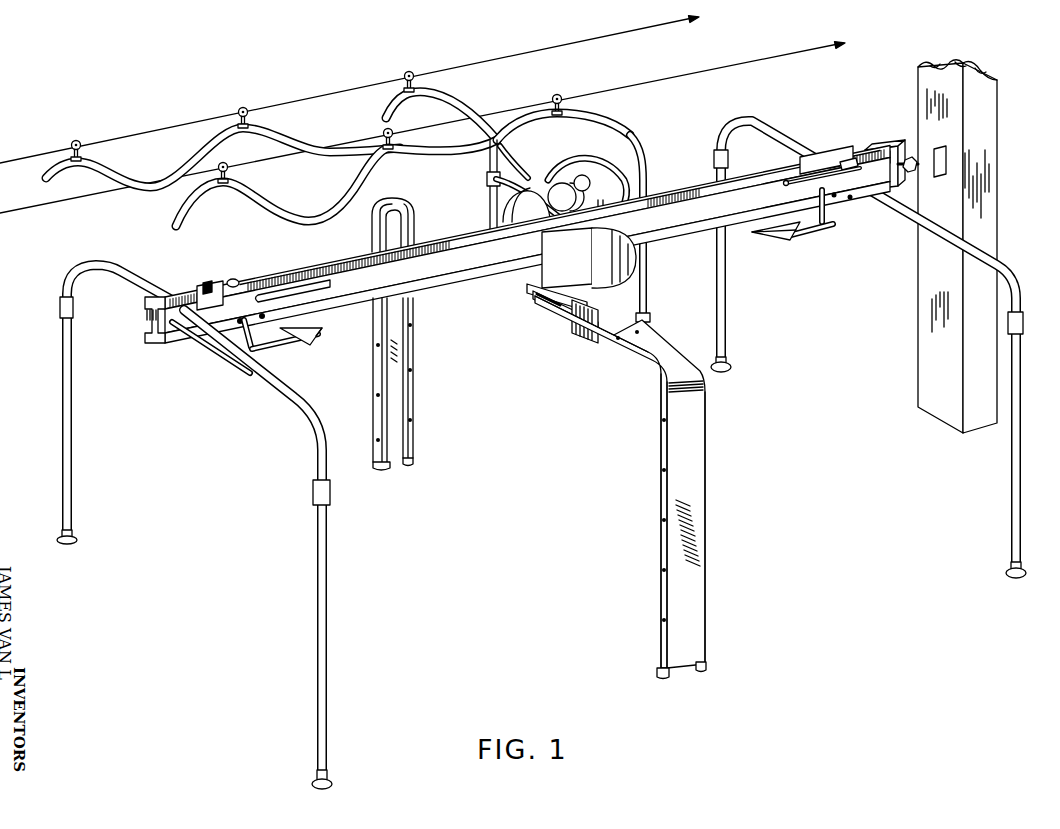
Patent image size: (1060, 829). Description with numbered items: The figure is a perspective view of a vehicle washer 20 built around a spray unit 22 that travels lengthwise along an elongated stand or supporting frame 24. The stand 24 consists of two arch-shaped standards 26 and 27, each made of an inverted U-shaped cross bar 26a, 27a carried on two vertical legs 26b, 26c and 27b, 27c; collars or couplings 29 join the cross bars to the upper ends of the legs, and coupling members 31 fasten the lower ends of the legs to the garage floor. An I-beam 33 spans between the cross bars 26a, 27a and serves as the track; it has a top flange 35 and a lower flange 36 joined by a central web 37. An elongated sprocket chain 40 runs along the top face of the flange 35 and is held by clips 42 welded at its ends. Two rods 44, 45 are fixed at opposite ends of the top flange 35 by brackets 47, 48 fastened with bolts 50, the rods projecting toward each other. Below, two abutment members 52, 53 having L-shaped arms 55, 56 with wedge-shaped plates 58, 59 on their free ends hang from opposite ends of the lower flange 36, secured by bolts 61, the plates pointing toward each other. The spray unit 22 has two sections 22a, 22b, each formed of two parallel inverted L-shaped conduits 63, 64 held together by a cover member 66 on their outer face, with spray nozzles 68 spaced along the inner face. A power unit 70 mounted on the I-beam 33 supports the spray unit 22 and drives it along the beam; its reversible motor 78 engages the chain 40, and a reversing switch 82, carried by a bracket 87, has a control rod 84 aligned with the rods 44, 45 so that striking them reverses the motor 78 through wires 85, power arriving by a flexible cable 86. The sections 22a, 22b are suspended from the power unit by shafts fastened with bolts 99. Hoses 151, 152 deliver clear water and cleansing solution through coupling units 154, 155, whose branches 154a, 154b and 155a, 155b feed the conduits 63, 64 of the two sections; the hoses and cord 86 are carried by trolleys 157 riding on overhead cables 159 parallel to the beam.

The vehicle washer 20 is at (810, 110).
The spray unit 22 is at (709, 429).
The spray unit section 22a is at (563, 327).
The spray unit section 22b is at (436, 206).
The stand or supporting frame 24 is at (869, 150).
The arch-shaped standard 26 is at (266, 398).
The cross bar 26a is at (321, 438).
The vertical leg 26b is at (320, 622).
The vertical leg 26c is at (73, 415).
The arch-shaped standard 27 is at (1016, 263).
The cross bar 27a is at (1019, 288).
The vertical leg 27b is at (1012, 461).
The vertical leg 27c is at (725, 308).
The coupling collar 29 is at (60, 308).
The coupling member 31 is at (73, 535).
The I-beam 33 is at (497, 263).
The top flange 35 is at (511, 228).
The lower flange 36 is at (163, 343).
The central web 37 is at (144, 325).
The sprocket chain 40 is at (293, 264).
The clip 42 is at (238, 280).
The rod 44 is at (275, 293).
The rod 45 is at (788, 185).
The bracket 47 is at (219, 290).
The bracket 48 is at (845, 162).
The bolt 50 is at (205, 282).
The abutment member 52 is at (275, 352).
The abutment member 53 is at (820, 232).
The L-shaped arm 55 is at (240, 357).
The L-shaped arm 56 is at (828, 218).
The wedge-shaped plate 58 is at (320, 333).
The wedge-shaped plate 59 is at (783, 235).
The bolt 61 is at (263, 317).
The conduit 63 is at (390, 470).
The conduit 64 is at (414, 461).
The cover member 66 is at (398, 378).
The spray nozzle 68 is at (372, 228).
The power unit 70 is at (523, 190).
The reversible motor 78 is at (559, 183).
The reversing switch 82 is at (613, 173).
The control rod 84 is at (606, 228).
The wire 85 is at (578, 176).
The flexible cable 86 is at (175, 208).
The bracket 87 is at (560, 222).
The bolt 99 is at (558, 304).
The hose 151 is at (277, 139).
The hose 152 is at (254, 197).
The coupling unit 154 is at (589, 258).
The coupling branch 154a is at (567, 327).
The coupling branch 154b is at (492, 190).
The coupling unit 155 is at (625, 170).
The coupling branch 155a is at (651, 219).
The coupling branch 155b is at (530, 172).
The trolley 157 is at (248, 102).
The cable 159 is at (634, 84).